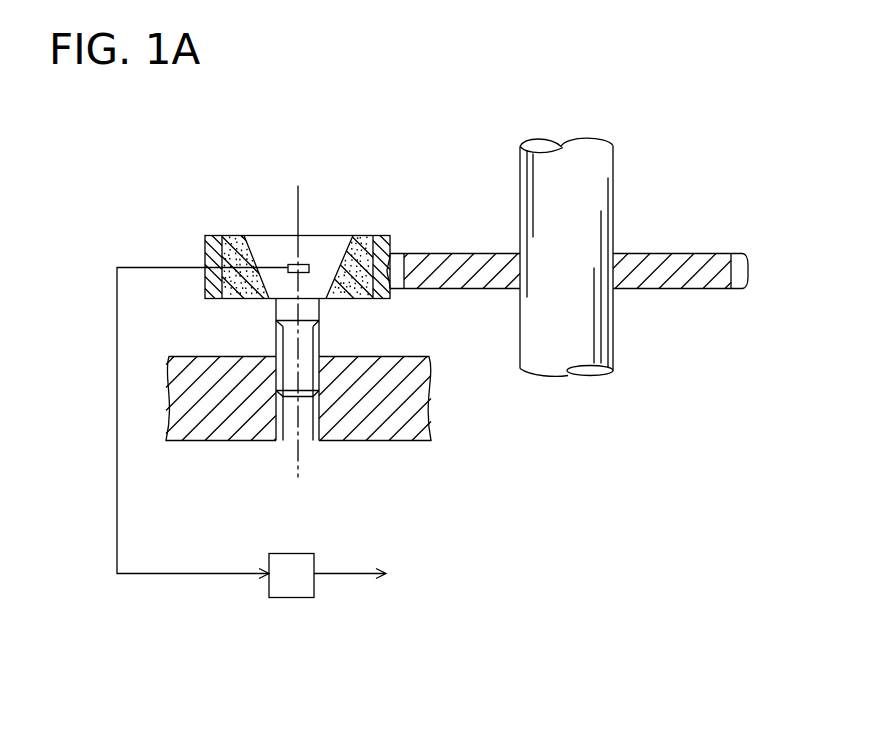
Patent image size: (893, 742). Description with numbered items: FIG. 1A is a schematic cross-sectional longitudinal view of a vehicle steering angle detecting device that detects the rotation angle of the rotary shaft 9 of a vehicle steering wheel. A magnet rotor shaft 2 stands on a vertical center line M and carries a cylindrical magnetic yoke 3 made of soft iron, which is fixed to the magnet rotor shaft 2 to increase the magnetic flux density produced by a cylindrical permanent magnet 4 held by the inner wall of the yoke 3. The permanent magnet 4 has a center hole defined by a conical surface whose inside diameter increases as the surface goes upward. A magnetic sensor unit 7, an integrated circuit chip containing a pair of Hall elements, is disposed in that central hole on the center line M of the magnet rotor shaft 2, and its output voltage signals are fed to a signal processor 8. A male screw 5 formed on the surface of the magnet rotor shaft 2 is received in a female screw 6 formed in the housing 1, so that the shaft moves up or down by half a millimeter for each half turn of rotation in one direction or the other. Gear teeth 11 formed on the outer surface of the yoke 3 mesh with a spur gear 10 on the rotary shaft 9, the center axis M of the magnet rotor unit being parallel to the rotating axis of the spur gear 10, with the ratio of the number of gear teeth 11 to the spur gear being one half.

The housing 1 is at (200, 440).
The magnet rotor shaft 2 is at (287, 310).
The cylindrical magnetic yoke 3 is at (214, 235).
The cylindrical permanent magnet 4 is at (363, 235).
The male screw 5 is at (275, 370).
The female screw 6 is at (318, 413).
The magnetic sensor unit 7 is at (289, 264).
The signal processor 8 is at (295, 590).
The rotary shaft 9 is at (600, 163).
The spur gear 10 is at (462, 267).
The gear teeth 11 is at (392, 247).
The vertical center line M is at (299, 203).